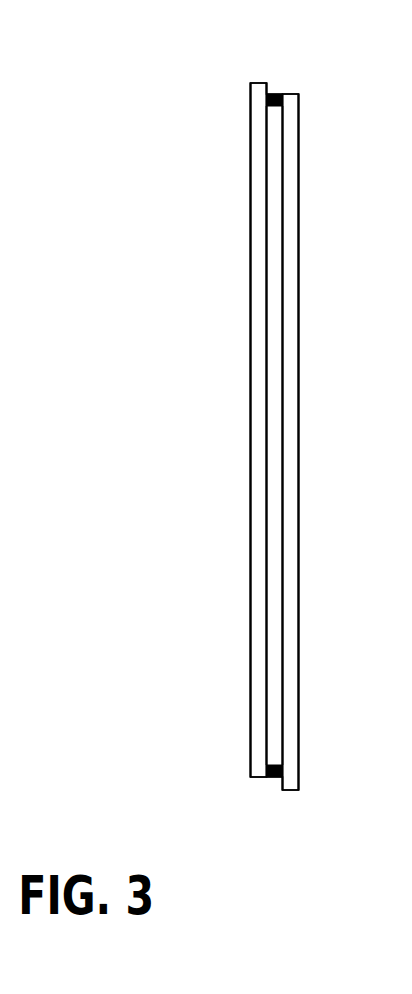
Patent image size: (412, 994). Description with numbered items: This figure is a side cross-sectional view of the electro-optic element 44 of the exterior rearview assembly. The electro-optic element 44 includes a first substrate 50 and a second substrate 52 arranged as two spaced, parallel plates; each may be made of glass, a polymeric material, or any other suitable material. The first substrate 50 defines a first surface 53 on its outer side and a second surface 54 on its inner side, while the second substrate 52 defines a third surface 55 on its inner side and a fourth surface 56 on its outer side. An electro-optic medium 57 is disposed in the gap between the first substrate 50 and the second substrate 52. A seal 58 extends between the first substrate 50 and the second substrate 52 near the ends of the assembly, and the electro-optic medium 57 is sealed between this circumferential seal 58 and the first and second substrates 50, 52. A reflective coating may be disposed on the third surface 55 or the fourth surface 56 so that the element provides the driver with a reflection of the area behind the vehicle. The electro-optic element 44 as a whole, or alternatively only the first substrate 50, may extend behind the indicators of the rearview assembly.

The electro-optic element 44 is at (298, 146).
The first substrate 50 is at (287, 243).
The second substrate 52 is at (258, 233).
The first surface 53 is at (298, 301).
The second surface 54 is at (283, 388).
The third surface 55 is at (265, 369).
The fourth surface 56 is at (250, 443).
The electro-optic medium 57 is at (273, 702).
The seal 58 is at (273, 93).